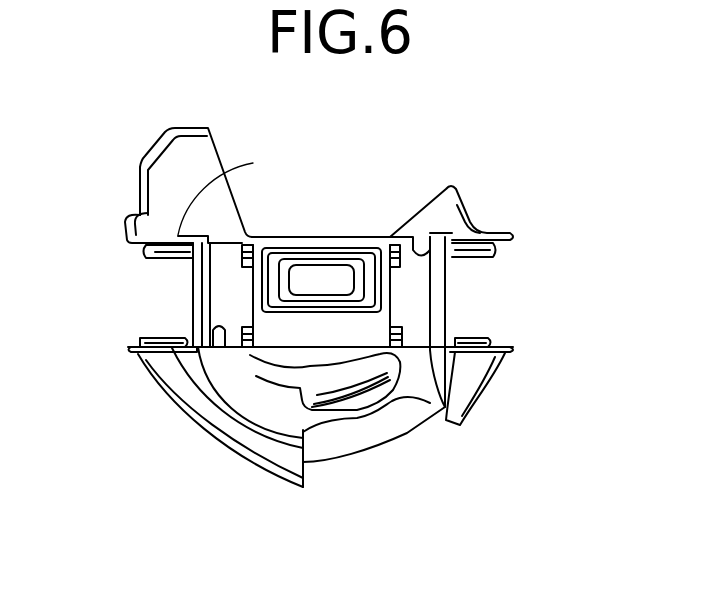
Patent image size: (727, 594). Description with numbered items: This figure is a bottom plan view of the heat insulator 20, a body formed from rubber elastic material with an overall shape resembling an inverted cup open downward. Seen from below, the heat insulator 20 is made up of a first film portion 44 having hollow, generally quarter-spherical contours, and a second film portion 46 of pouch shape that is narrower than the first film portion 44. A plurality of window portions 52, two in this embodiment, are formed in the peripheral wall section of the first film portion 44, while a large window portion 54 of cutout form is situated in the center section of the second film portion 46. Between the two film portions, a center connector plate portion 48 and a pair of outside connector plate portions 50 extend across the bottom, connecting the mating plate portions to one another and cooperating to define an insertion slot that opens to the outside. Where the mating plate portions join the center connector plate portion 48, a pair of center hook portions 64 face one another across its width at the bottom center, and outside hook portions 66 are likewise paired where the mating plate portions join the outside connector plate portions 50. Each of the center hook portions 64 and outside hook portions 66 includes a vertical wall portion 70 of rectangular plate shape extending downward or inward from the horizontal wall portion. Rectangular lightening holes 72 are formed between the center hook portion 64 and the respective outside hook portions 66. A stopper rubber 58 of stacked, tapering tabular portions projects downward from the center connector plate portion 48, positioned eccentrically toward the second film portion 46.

The heat insulator 20 is at (93, 126).
The first film portion 44 is at (273, 430).
The second film portion 46 is at (459, 205).
The center connector plate portion 48 is at (313, 327).
The outside connector plate portion 50 is at (202, 298).
The window portion 52 is at (308, 470).
The large window portion 54 is at (222, 152).
The stopper rubber 58 is at (335, 278).
The center hook portion 64 is at (232, 248).
The outside hook portion 66 is at (150, 232).
The vertical wall portion 70 is at (389, 237).
The lightening hole 72 is at (432, 237).